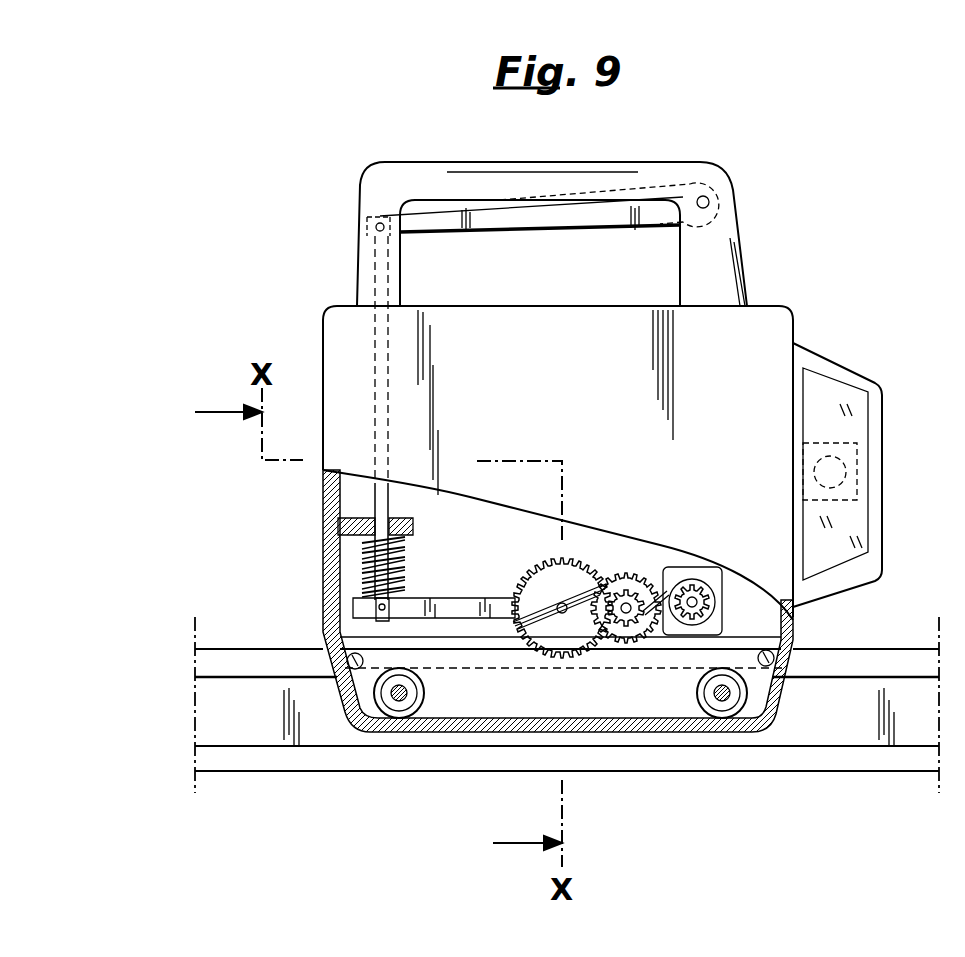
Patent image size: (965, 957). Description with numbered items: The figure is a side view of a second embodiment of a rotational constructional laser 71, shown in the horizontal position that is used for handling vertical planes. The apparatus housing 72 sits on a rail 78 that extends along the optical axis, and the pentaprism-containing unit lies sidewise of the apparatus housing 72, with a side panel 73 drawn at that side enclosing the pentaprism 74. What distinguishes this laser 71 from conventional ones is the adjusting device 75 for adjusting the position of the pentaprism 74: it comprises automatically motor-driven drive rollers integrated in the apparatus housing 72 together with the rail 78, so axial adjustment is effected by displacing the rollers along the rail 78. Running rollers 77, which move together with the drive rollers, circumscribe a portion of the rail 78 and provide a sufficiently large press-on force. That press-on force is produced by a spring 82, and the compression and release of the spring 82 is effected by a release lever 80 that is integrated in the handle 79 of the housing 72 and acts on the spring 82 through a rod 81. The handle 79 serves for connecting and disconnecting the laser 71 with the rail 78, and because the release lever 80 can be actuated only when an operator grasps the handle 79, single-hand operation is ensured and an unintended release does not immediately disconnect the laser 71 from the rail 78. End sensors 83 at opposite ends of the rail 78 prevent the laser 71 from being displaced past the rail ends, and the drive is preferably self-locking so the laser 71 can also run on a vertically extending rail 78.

The rotational constructional laser 71 is at (802, 250).
The apparatus housing 72 is at (330, 345).
The side panel 73 is at (850, 352).
The pentaprism 74 is at (847, 468).
The adjusting device 75 is at (534, 664).
The running rollers 77 is at (399, 702).
The rail 78 is at (827, 728).
The handle 79 is at (372, 203).
The release lever 80 is at (584, 214).
The rod 81 is at (372, 262).
The spring 82 is at (407, 552).
The end sensors 83 is at (350, 654).